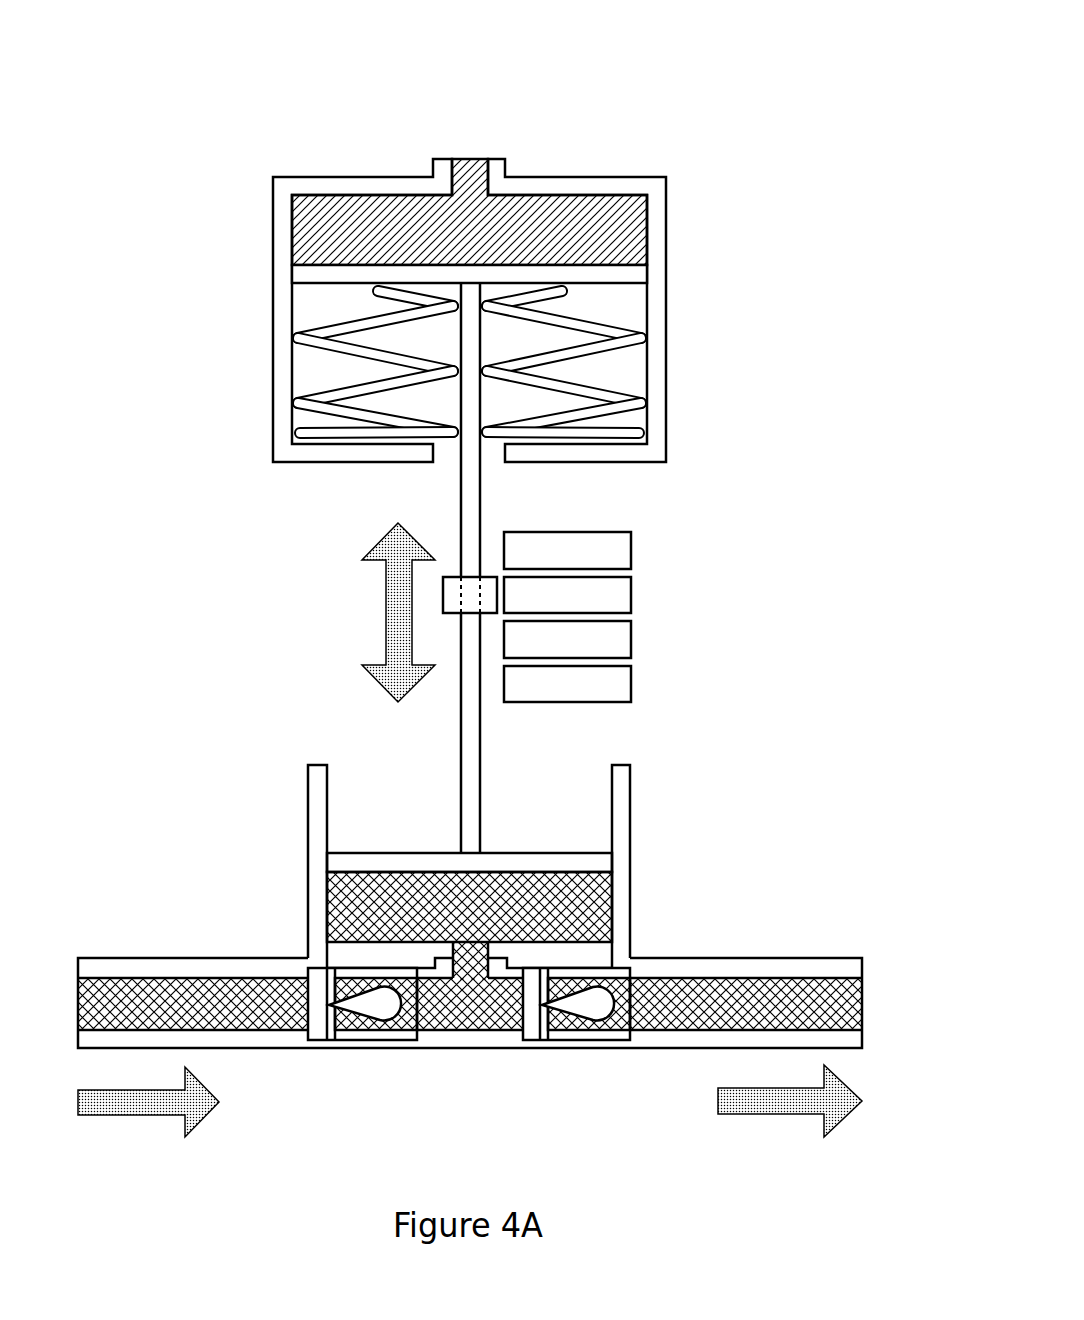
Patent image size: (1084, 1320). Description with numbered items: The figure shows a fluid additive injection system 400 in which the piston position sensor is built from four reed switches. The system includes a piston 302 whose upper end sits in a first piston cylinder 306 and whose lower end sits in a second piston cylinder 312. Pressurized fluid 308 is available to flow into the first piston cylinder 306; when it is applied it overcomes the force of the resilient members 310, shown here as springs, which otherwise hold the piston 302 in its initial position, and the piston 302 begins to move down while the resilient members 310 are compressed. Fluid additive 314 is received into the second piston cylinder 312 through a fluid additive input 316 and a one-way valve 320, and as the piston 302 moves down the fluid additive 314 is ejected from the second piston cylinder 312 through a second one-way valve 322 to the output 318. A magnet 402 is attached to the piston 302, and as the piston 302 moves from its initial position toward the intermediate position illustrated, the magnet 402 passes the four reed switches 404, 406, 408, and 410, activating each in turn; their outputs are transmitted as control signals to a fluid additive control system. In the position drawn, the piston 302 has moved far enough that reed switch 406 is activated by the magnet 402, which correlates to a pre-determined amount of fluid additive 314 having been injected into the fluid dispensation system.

The fluid additive injection system 400 is at (658, 92).
The piston 302 is at (489, 850).
The first piston cylinder 306 is at (658, 176).
The pressurized fluid 308 is at (470, 160).
The resilient members 310 is at (309, 390).
The second piston cylinder 312 is at (631, 765).
The fluid additive 314 is at (591, 907).
The fluid additive input 316 is at (96, 958).
The output 318 is at (808, 993).
The one-way valve 320 is at (362, 1042).
The one-way valve 322 is at (577, 1042).
The magnet 402 is at (452, 577).
The reed switch 404 is at (547, 563).
The reed switch 406 is at (547, 607).
The reed switch 408 is at (547, 652).
The reed switch 410 is at (547, 696).